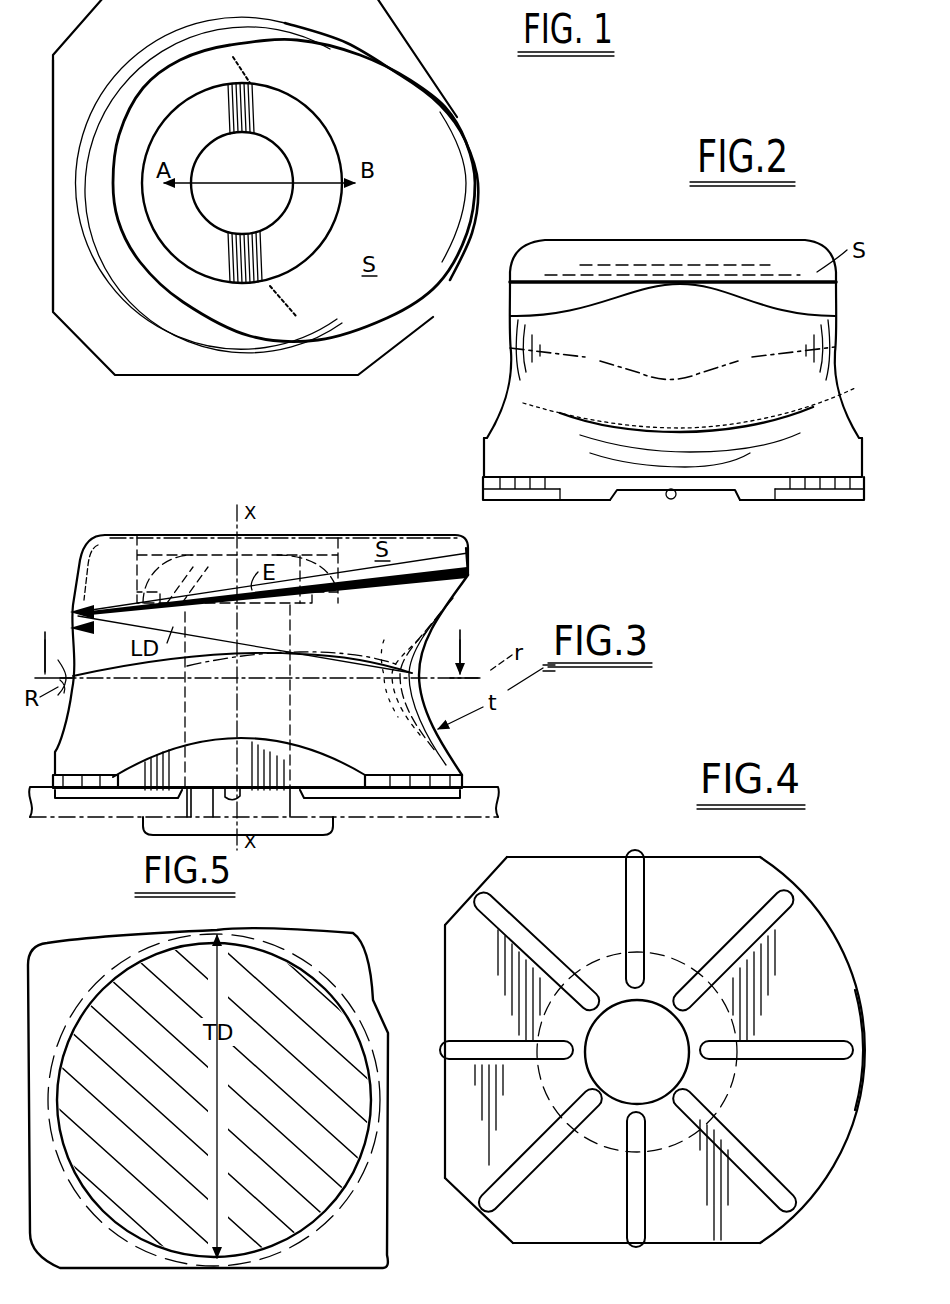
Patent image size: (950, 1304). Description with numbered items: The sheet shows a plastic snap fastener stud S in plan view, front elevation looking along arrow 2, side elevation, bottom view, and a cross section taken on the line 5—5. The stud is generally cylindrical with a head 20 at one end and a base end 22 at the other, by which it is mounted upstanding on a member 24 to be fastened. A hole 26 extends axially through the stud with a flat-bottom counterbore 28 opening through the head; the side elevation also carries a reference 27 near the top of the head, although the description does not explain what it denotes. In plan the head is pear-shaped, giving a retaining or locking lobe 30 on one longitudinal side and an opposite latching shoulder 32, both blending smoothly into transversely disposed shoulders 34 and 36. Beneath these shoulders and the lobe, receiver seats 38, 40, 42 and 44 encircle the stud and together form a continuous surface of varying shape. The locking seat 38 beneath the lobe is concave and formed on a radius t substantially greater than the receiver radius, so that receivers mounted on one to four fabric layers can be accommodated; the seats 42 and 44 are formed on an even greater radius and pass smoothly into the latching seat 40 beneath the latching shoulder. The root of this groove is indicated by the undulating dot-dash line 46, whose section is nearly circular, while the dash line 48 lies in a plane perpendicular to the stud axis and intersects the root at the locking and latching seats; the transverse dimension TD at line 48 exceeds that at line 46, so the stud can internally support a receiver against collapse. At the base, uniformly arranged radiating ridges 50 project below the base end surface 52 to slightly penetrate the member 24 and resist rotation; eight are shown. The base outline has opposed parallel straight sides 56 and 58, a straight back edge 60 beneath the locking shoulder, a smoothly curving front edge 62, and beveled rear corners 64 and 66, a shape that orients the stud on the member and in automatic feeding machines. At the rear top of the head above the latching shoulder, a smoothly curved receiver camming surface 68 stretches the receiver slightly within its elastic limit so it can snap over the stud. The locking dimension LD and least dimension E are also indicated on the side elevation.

In FIG. 1, the arrow 2 is at (490, 181).
In FIG. 3, the section line 5— 5 is at (252, 654).
In FIG. 1, the head 20 is at (392, 132).
In FIG. 2, the head 20 is at (657, 247).
In FIG. 3, the head 20 is at (118, 535).
In FIG. 2, the base end 22 is at (722, 497).
In FIG. 3, the base end 22 is at (257, 786).
In FIG. 3, the member 24 is at (423, 815).
In FIG. 1, the hole 26 is at (257, 174).
In FIG. 3, the hole 26 is at (290, 720).
In FIG. 4, the hole 26 is at (590, 1040).
In FIG. 3, the pocket wall 27 is at (317, 533).
In FIG. 1, the counterbore 28 is at (205, 139).
In FIG. 3, the counterbore 28 is at (200, 535).
In FIG. 1, the retaining lobe 30 is at (469, 146).
In FIG. 3, the retaining lobe 30 is at (465, 542).
In FIG. 4, the retaining lobe 30 is at (868, 1033).
In FIG. 1, the latching shoulder 32 is at (88, 150).
In FIG. 3, the latching shoulder 32 is at (82, 562).
In FIG. 2, the transverse shoulder 34 is at (507, 285).
In FIG. 2, the transverse shoulder 36 is at (840, 300).
In FIG. 3, the locking seat 38 is at (427, 633).
In FIG. 3, the latching seat 40 is at (63, 717).
In FIG. 2, the receiver seat 42 is at (510, 365).
In FIG. 2, the receiver seat 44 is at (840, 377).
In FIG. 2, the root dimension line 46 is at (717, 367).
In FIG. 3, the root dimension line 46 is at (297, 653).
In FIG. 5, the root dimension line 46 is at (277, 1250).
In FIG. 3, the dash line 48 is at (175, 680).
In FIG. 5, the dash line 48 is at (283, 947).
In FIG. 2, the radiating ridges 50 is at (676, 498).
In FIG. 3, the radiating ridges 50 is at (233, 792).
In FIG. 4, the radiating ridges 50 is at (745, 923).
In FIG. 2, the base end surface 52 is at (688, 496).
In FIG. 4, the straight side 56 is at (593, 857).
In FIG. 4, the straight side 58 is at (583, 1247).
In FIG. 4, the back edge 60 is at (443, 960).
In FIG. 4, the front edge 62 is at (830, 927).
In FIG. 4, the beveled rear corner 64 is at (470, 890).
In FIG. 4, the beveled rear corner 66 is at (487, 1230).
In FIG. 3, the receiver camming surface 68 is at (98, 542).